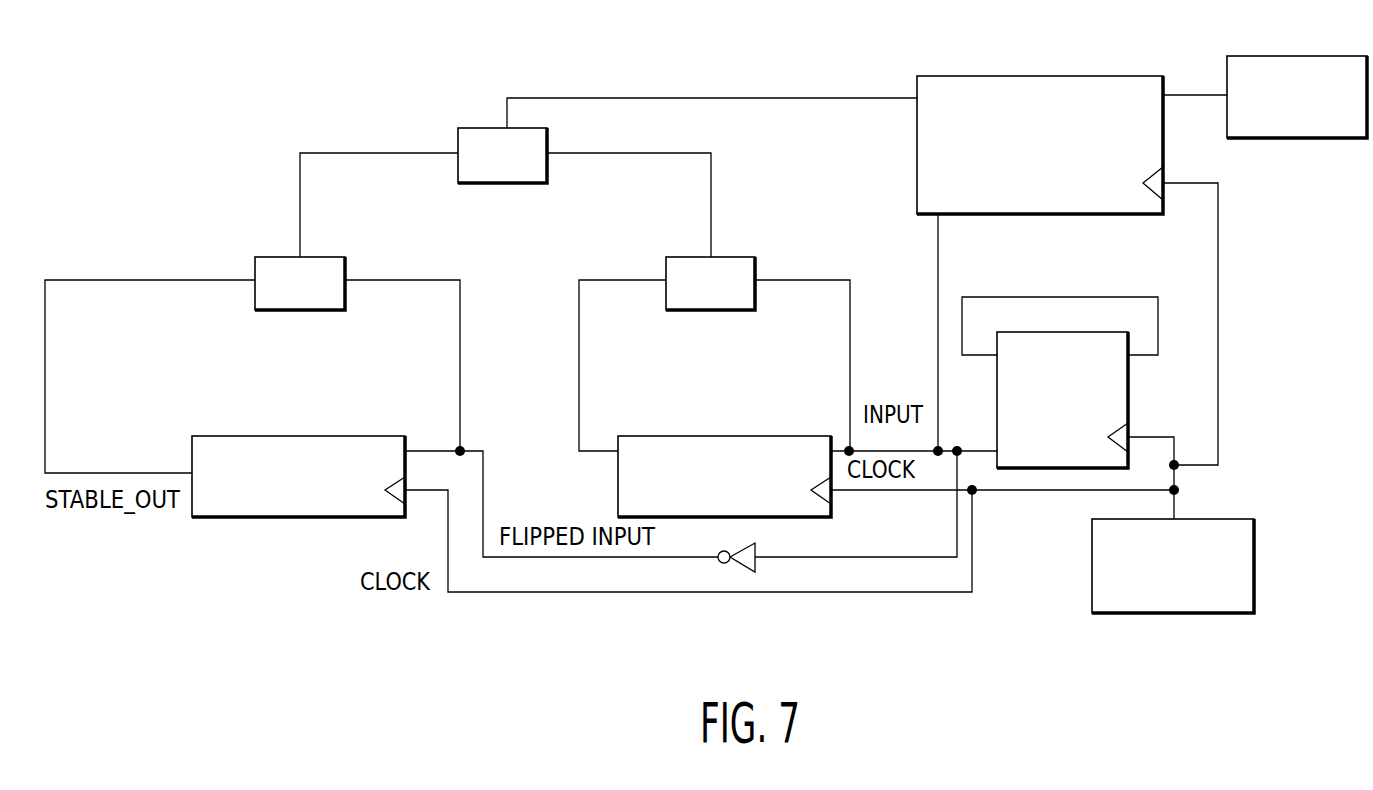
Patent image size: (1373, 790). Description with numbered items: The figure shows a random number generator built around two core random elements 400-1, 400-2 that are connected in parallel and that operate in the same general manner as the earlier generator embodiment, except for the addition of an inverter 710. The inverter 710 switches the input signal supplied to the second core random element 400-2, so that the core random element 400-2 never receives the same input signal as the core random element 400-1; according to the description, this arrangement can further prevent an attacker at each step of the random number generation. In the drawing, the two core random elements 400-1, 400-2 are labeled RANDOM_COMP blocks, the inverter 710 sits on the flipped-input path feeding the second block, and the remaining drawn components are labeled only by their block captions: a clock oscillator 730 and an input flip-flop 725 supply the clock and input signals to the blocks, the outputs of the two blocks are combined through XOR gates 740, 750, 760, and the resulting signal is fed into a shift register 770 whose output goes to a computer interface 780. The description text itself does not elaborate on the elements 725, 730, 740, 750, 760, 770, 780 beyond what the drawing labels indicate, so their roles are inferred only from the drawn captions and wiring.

The core random element 400-1 is at (685, 435).
The core random element 400-2 is at (320, 435).
The inverter 710 is at (758, 548).
The input flip-flop 725 is at (1130, 415).
The clock oscillator 730 is at (1091, 572).
The XOR gate 740 is at (720, 311).
The XOR gate 750 is at (283, 256).
The XOR gate 760 is at (481, 127).
The shift register 770 is at (1020, 75).
The computer interface 780 is at (1263, 139).